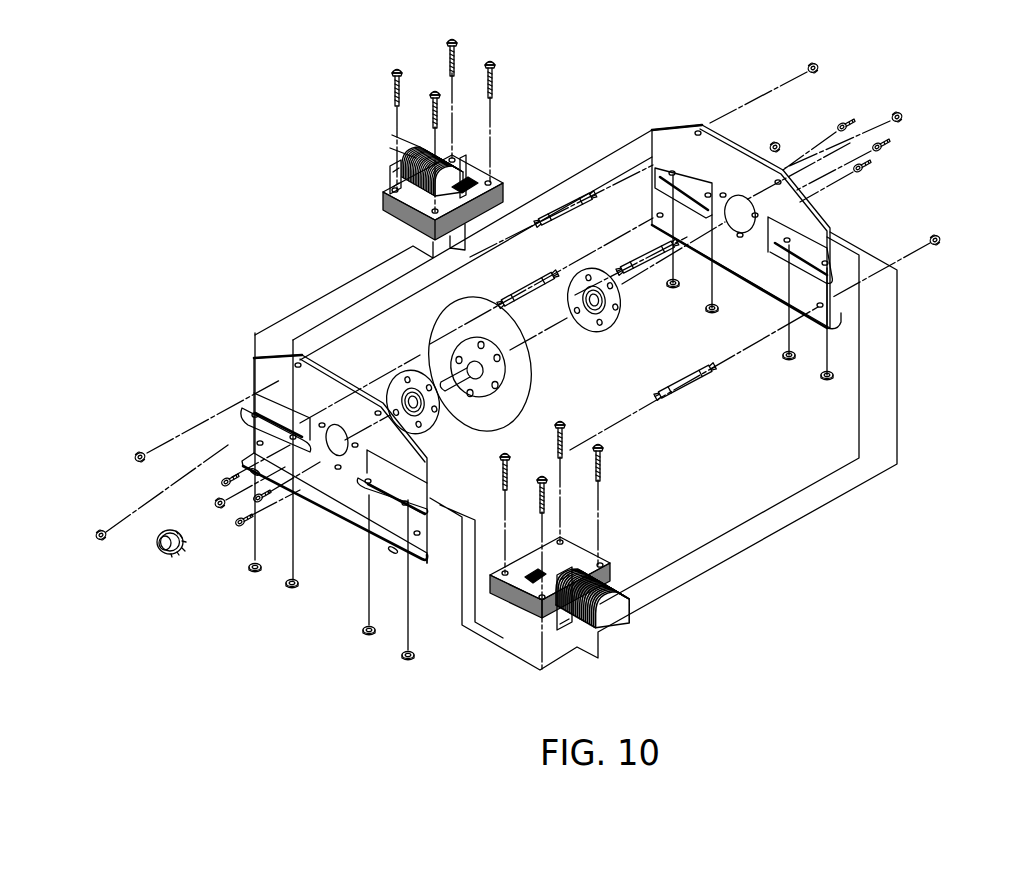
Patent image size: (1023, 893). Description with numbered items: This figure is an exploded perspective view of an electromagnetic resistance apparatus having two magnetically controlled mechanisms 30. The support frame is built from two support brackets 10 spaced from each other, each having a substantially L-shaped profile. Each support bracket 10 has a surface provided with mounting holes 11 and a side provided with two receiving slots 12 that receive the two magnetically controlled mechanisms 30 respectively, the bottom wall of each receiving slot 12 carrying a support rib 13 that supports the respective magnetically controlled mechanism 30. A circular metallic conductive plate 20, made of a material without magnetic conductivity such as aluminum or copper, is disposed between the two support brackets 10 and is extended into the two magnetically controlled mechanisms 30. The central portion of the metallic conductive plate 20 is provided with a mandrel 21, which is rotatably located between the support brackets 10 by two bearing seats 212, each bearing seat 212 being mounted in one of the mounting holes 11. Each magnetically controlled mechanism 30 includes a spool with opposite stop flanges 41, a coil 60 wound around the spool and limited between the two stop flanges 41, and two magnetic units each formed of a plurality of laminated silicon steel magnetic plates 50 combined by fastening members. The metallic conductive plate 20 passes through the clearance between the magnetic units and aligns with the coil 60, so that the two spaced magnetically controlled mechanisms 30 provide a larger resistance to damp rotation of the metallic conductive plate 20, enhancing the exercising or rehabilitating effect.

The support bracket 10 is at (797, 218).
The mounting hole 11 is at (737, 198).
The receiving slot 12 is at (673, 170).
The support rib 13 is at (900, 268).
The metallic conductive plate 20 is at (512, 403).
The mandrel 21 is at (473, 372).
The bearing seat 212 is at (403, 376).
The magnetically controlled mechanism 30 is at (477, 383).
The stop flange 41 is at (393, 177).
The magnetic plate 50 is at (497, 180).
The coil 60 is at (417, 150).